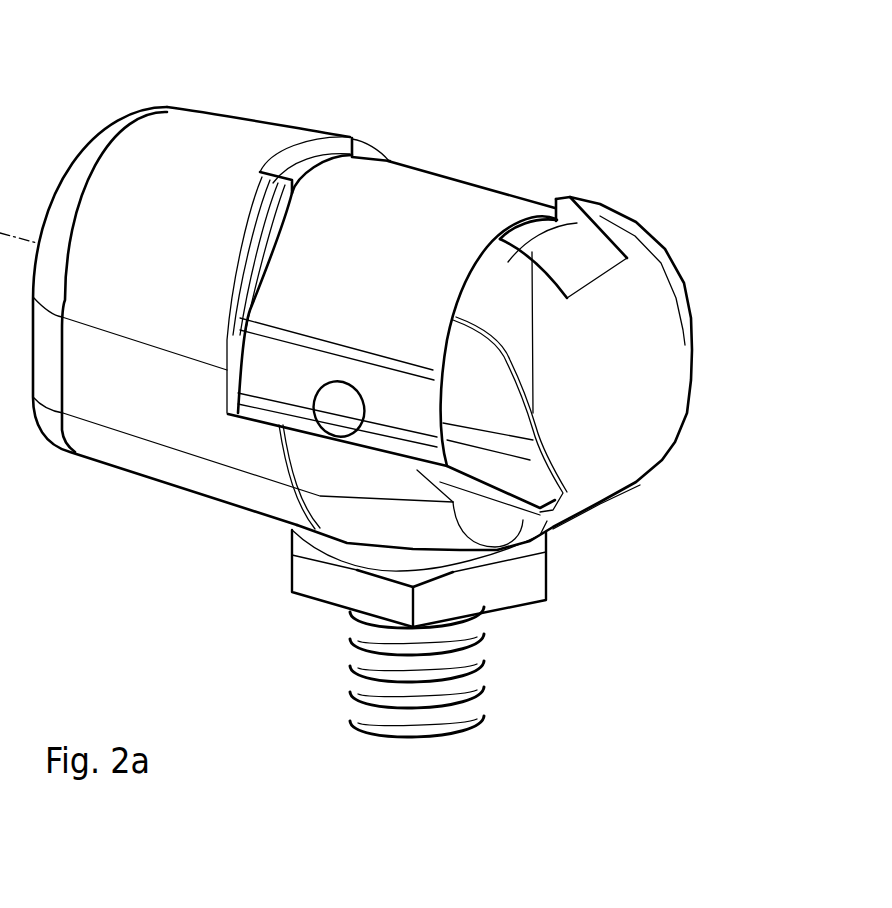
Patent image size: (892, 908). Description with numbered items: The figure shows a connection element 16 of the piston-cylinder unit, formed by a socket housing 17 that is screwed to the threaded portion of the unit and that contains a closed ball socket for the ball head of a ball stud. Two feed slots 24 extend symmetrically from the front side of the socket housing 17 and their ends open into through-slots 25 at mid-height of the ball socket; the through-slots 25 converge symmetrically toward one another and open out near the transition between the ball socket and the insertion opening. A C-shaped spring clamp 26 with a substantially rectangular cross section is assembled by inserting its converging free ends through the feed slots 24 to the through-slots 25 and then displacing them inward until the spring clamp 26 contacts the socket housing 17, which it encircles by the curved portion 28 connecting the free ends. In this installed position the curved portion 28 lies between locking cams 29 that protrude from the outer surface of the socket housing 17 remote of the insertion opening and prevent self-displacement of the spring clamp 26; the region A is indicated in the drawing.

The connection element 16 is at (314, 114).
The socket housing 17 is at (583, 310).
The feed slots 24 is at (590, 515).
The through-slots 25 is at (548, 538).
The spring clamp 26 is at (285, 307).
The curved portion 28 is at (452, 208).
The locking cams 29 is at (273, 187).
The ball A is at (592, 397).